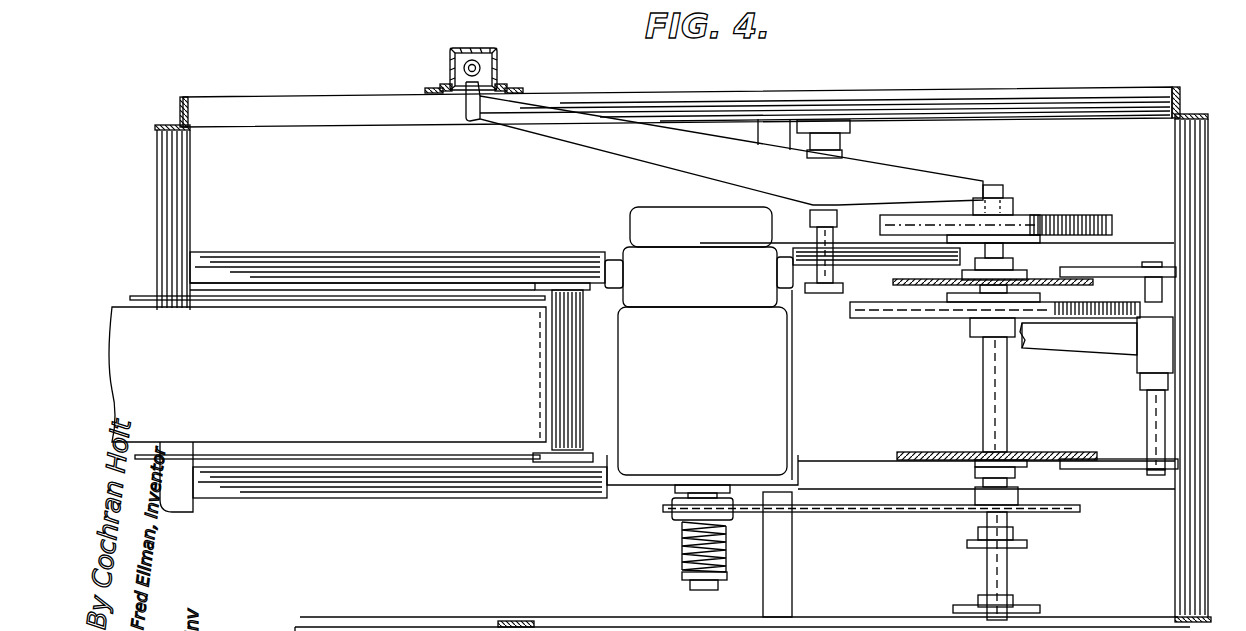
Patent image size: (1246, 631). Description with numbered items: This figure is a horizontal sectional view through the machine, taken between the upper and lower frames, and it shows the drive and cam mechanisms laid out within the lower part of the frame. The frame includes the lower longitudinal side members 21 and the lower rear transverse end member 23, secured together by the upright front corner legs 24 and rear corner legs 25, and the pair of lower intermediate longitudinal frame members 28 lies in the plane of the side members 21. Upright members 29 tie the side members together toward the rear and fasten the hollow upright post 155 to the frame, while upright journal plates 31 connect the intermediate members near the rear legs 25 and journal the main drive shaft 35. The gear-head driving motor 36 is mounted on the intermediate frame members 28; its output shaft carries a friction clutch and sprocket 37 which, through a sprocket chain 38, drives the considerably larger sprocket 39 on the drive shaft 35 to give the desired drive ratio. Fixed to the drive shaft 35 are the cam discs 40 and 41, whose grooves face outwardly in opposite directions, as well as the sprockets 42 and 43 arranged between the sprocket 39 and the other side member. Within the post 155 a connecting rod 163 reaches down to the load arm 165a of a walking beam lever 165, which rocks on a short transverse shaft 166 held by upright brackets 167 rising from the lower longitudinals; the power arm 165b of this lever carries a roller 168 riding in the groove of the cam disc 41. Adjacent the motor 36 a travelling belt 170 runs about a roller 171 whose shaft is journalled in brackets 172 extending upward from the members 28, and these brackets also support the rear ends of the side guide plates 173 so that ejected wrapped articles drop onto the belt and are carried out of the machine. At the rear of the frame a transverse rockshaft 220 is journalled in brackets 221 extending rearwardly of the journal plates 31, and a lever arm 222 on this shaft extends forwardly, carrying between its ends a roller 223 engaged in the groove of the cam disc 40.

The lower longitudinal side member 21 is at (275, 128).
The lower rear transverse end member 23 is at (191, 219).
The front corner leg 24 is at (181, 100).
The rear corner leg 25 is at (1181, 102).
The lower intermediate longitudinal frame member 28 is at (500, 256).
The upright member 29 is at (467, 77).
The upright journal plate 31 is at (1046, 279).
The main drive shaft 35 is at (983, 359).
The driving motor 36 is at (701, 346).
The friction clutch and sprocket 37 is at (675, 521).
The sprocket chain 38 is at (887, 513).
The sprocket 39 is at (1058, 510).
The cam disc 40 is at (866, 318).
The cam disc 41 is at (1095, 214).
The sprocket 42 is at (1009, 596).
The sprocket 43 is at (1028, 545).
The hollow upright post 155 is at (490, 33).
The connecting rod 163 is at (482, 64).
The walking beam lever 165 is at (720, 138).
The load arm 165a is at (628, 152).
The power arm 165b is at (905, 180).
The short transverse shaft 166 is at (833, 233).
The upright bracket 167 is at (845, 128).
The roller 168 is at (1017, 198).
The travelling belt 170 is at (248, 324).
The roller 171 is at (585, 446).
The bracket 172 is at (553, 283).
The side guide plate 173 is at (335, 296).
The transverse rockshaft 220 is at (1150, 424).
The bracket 221 is at (1120, 268).
The lever arm 222 is at (1080, 345).
The roller 223 is at (1048, 332).